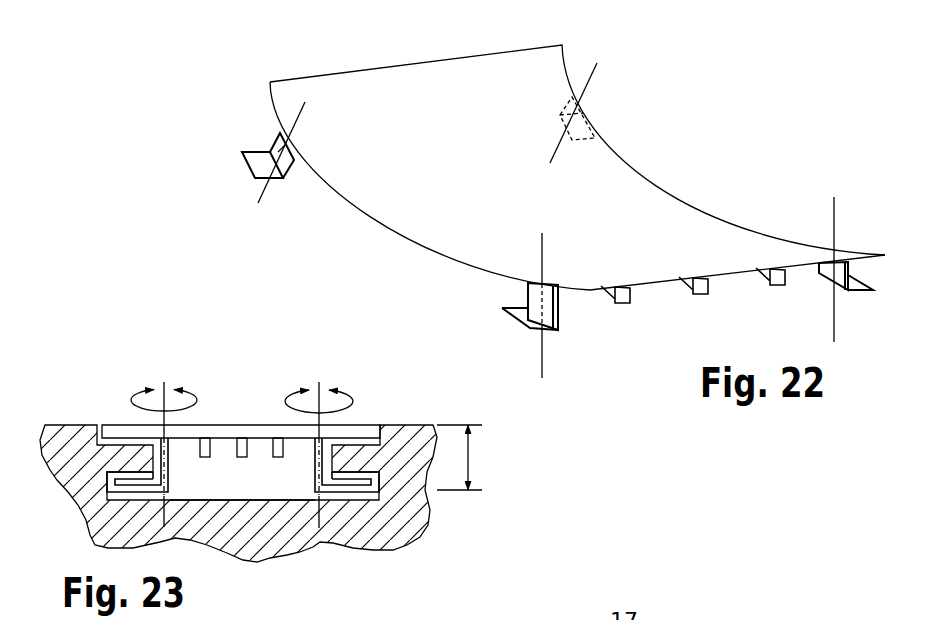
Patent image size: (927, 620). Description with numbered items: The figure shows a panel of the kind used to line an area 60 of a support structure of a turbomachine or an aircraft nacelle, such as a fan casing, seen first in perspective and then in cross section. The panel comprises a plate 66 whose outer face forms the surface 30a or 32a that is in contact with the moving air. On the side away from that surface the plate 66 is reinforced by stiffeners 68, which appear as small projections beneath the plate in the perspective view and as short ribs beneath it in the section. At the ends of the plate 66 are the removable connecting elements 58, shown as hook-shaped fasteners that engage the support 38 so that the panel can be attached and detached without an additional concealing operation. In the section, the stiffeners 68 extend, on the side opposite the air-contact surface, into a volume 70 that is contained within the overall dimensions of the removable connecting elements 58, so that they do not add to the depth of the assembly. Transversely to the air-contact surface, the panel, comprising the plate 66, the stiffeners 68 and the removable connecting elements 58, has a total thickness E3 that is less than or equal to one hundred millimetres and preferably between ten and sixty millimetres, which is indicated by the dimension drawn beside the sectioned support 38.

In FIG. 22, the surface 30a is at (415, 112).
In FIG. 22, the surface 32a is at (577, 137).
In FIG. 23, the structural substrate 38 is at (372, 517).
In FIG. 22, the removable connecting element 58 is at (246, 171).
In FIG. 23, the removable connecting element 58 is at (133, 495).
In FIG. 23, the area of a support 60 is at (206, 459).
In FIG. 22, the plate 66 is at (452, 213).
In FIG. 23, the plate 66 is at (116, 425).
In FIG. 22, the stiffener 68 is at (702, 297).
In FIG. 23, the stiffener 68 is at (205, 440).
In FIG. 23, the volume 70 is at (225, 475).
In FIG. 23, the total thickness E3 is at (473, 457).